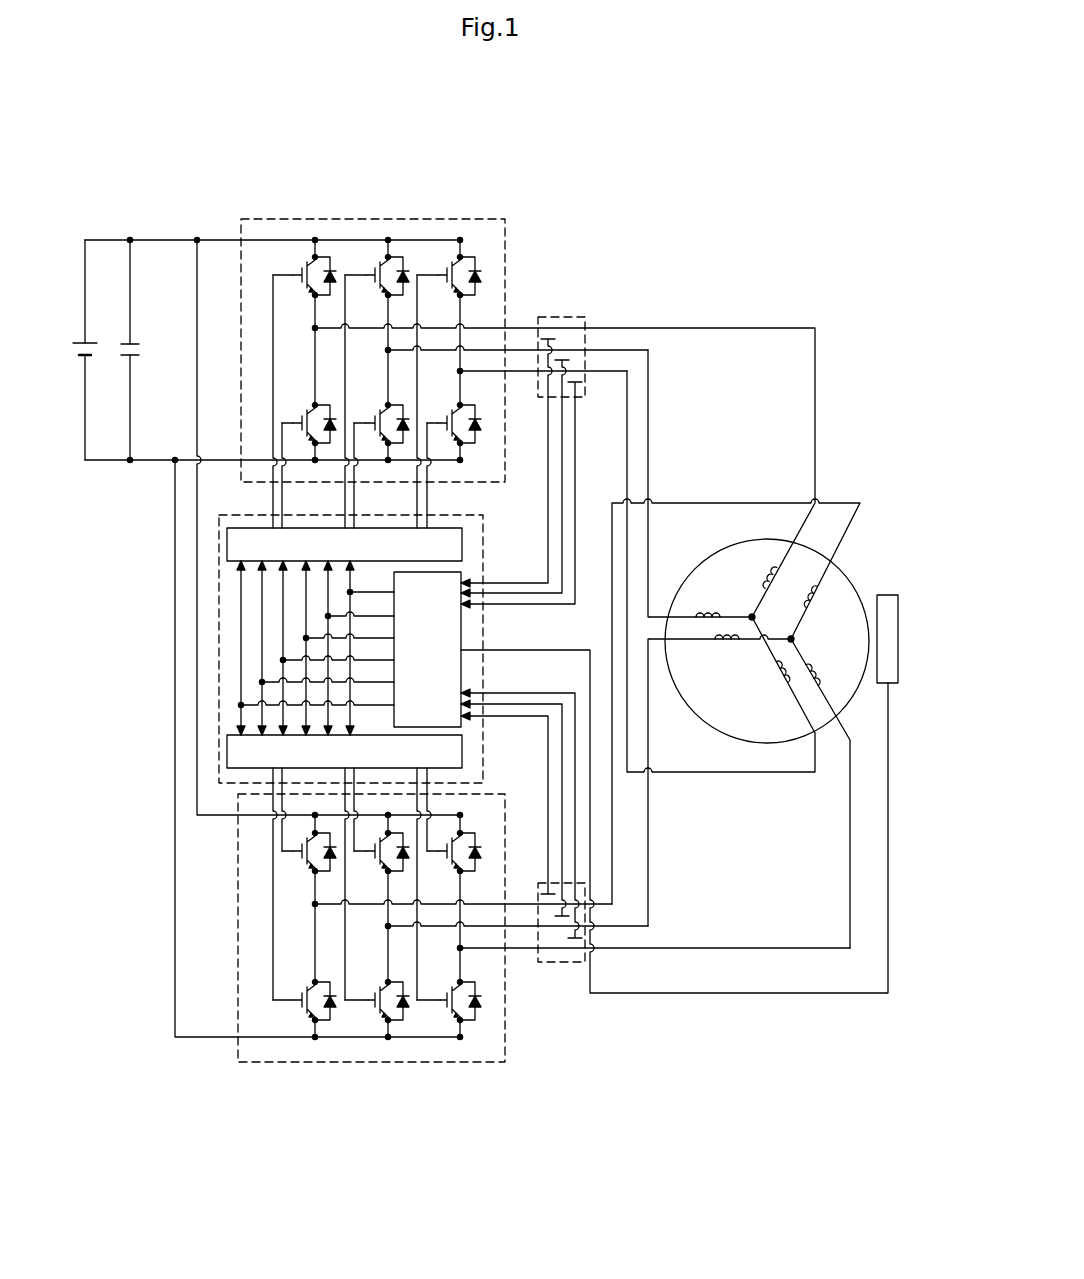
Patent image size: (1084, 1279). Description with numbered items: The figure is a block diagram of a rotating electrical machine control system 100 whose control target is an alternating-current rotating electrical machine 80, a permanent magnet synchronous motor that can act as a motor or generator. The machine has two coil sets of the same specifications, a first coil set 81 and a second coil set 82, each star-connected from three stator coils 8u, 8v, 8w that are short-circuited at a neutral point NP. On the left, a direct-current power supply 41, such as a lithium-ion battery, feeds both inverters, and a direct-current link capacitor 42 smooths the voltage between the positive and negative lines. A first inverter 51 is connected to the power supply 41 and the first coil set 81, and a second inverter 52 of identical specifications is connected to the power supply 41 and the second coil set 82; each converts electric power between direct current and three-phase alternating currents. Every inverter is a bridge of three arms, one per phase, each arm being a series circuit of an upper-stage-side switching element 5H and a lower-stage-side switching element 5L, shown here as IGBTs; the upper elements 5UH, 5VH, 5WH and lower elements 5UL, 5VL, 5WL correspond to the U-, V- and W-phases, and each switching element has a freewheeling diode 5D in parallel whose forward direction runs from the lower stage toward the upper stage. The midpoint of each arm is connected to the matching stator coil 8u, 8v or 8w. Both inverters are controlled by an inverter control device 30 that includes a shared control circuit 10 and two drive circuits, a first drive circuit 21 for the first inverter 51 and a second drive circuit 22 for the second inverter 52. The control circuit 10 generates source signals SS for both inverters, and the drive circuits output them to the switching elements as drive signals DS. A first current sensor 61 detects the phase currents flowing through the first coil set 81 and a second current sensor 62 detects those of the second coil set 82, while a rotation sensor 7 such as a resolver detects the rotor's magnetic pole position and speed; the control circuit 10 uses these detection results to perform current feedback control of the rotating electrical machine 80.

The rotating electrical machine control system 100 is at (731, 96).
The direct-current power supply 41 is at (92, 338).
The direct-current link capacitor 42 is at (137, 338).
The first inverter 51 is at (503, 218).
The second inverter 52 is at (238, 1062).
The upper-stage-side switching element 5H is at (268, 141).
The lower-stage-side switching element 5L is at (270, 1147).
The U-phase upper arm switch 5UH is at (293, 256).
The V-phase upper arm switch 5VH is at (365, 256).
The W-phase upper arm switch 5WH is at (440, 258).
The U-phase lower arm switch 5UL is at (301, 1022).
The V-phase lower arm switch 5VL is at (367, 1022).
The W-phase lower arm switch 5WL is at (437, 1022).
The freewheeling diode 5D is at (488, 263).
The first current sensor 61 is at (585, 318).
The second current sensor 62 is at (560, 962).
The first drive circuit 21 is at (447, 545).
The second drive circuit 22 is at (458, 758).
The control circuit 10 is at (455, 627).
The inverter control device 30 is at (483, 672).
The rotation sensor 7 is at (898, 660).
The rotating electrical machine 80 is at (852, 561).
The first coil set 81 is at (721, 576).
The second coil set 82 is at (736, 723).
The U-phase stator coil 8u is at (769, 566).
The V-phase stator coil 8v is at (721, 658).
The W-phase stator coil 8w is at (781, 694).
The neutral point NP is at (745, 609).
The drive signals DS is at (257, 497).
The source signals SS is at (236, 645).